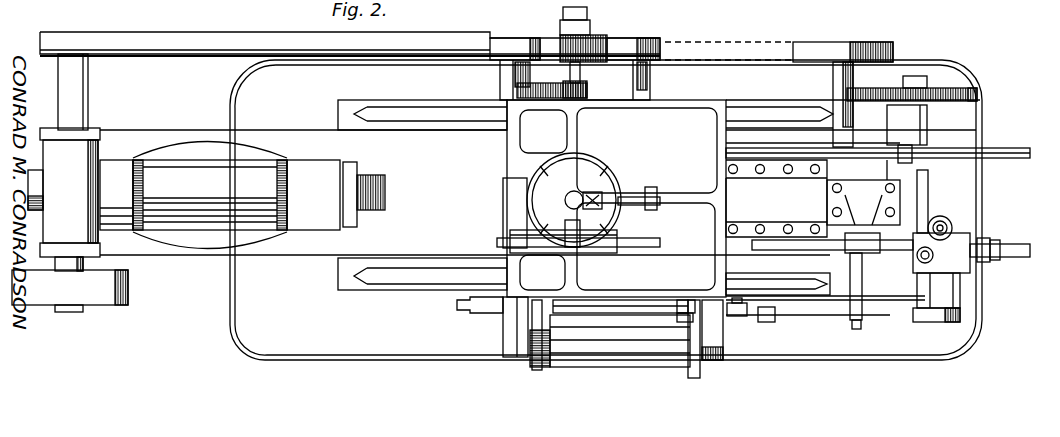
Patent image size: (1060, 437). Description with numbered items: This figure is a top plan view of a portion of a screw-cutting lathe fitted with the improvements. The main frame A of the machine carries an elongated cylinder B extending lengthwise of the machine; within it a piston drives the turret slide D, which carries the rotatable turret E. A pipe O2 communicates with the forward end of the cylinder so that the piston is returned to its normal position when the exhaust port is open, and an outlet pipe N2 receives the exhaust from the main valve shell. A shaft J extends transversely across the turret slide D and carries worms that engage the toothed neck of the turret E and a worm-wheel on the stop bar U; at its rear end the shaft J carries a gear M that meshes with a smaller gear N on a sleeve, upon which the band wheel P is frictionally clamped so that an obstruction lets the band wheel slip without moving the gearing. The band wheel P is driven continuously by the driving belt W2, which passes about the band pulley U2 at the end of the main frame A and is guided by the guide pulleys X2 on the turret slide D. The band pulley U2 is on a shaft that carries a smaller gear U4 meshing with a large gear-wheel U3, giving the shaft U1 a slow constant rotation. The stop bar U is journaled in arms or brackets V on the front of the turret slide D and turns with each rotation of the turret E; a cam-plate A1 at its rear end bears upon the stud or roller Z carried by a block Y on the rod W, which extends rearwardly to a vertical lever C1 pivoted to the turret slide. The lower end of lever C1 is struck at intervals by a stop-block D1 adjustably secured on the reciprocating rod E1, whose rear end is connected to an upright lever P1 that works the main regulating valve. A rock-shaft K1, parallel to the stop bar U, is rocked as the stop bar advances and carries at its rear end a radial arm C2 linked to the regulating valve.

The main frame A is at (497, 207).
The cam-plate A1 is at (700, 375).
The cylinder B is at (493, 195).
The vertical lever C1 is at (740, 322).
The radial arm C2 is at (940, 318).
The turret slide D is at (672, 104).
The stop-block D1 is at (768, 322).
The turret E is at (593, 200).
The rod E1 is at (822, 320).
The shaft J is at (520, 366).
The rock-shaft K1 is at (455, 303).
The gear M is at (500, 92).
The gear N is at (590, 92).
The outlet pipe N2 is at (992, 256).
The pipe O2 is at (878, 145).
The band wheel P is at (598, 36).
The upright lever P1 is at (866, 318).
The stop bar U is at (620, 341).
The shaft U1 is at (915, 77).
The band pulley U2 is at (843, 83).
The large gear-wheel U3 is at (977, 97).
The gear U4 is at (845, 95).
The arms or brackets V is at (613, 328).
The rod W is at (625, 303).
The driving band or belt W2 is at (416, 37).
The guide pulleys X2 is at (510, 40).
The block Y is at (686, 300).
The stud or roller Z is at (680, 318).